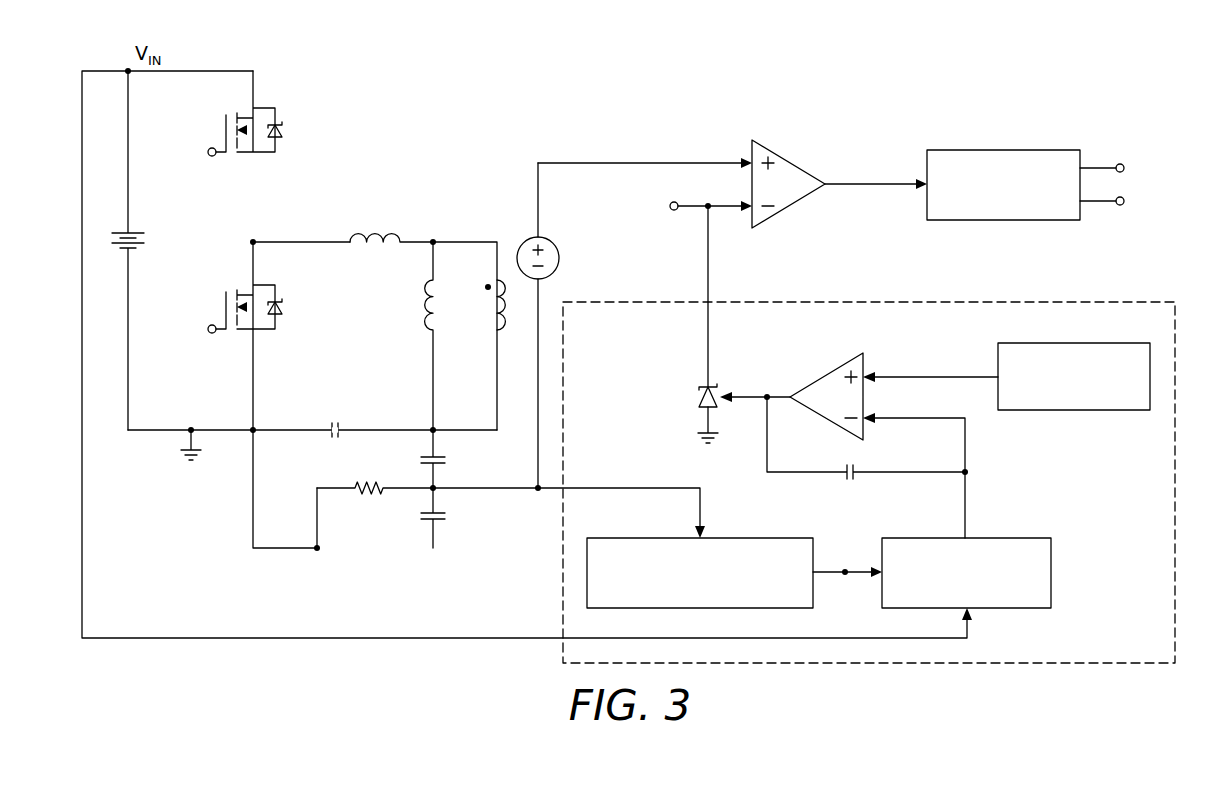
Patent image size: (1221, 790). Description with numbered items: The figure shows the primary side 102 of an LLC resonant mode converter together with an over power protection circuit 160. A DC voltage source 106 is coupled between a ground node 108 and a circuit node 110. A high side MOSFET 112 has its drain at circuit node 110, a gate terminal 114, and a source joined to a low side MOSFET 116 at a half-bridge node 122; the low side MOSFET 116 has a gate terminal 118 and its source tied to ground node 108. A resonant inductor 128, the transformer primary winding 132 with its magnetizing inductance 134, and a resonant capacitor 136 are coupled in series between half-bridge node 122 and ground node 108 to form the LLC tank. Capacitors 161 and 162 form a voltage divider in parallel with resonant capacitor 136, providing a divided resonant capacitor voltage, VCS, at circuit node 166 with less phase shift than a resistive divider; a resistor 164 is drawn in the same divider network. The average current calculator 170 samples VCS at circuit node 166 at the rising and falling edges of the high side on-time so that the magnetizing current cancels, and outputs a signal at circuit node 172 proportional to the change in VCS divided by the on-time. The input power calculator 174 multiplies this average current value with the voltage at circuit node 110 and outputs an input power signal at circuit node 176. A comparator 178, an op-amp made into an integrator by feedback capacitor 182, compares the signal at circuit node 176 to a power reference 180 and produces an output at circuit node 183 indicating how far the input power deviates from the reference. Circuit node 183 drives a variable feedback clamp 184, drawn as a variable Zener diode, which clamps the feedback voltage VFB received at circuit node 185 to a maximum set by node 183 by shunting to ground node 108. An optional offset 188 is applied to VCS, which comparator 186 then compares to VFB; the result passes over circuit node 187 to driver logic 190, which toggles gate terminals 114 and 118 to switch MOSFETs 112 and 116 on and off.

The primary side 102 is at (445, 147).
The voltage source 106 is at (140, 233).
The ground node 108 is at (191, 428).
The circuit node 110 is at (128, 71).
The high side MOSFET 112 is at (278, 120).
The gate terminal 114 is at (210, 147).
The low side MOSFET 116 is at (278, 295).
The gate terminal 118 is at (210, 324).
The half-bridge node 122 is at (256, 242).
The resonant inductor 128 is at (375, 236).
The primary winding 132 is at (495, 312).
The magnetizing inductance 134 is at (428, 305).
The resonant capacitor 136 is at (332, 425).
The over power protection circuit 160 is at (925, 302).
The capacitor 161 is at (440, 462).
The capacitor 162 is at (440, 521).
The resistor 164 is at (358, 486).
The circuit node 166 is at (538, 492).
The average current calculator 170 is at (745, 538).
The circuit node 172 is at (846, 570).
The input power calculator 174 is at (985, 538).
The circuit node 176 is at (968, 472).
The comparator 178 is at (825, 375).
The power reference 180 is at (1075, 410).
The capacitor 182 is at (845, 465).
The circuit node 183 is at (753, 395).
The variable feedback clamp 184 is at (700, 397).
The circuit node 185 is at (672, 210).
The comparator 186 is at (790, 160).
The circuit node 187 is at (873, 180).
The offset 188 is at (556, 262).
The driver logic 190 is at (1003, 150).